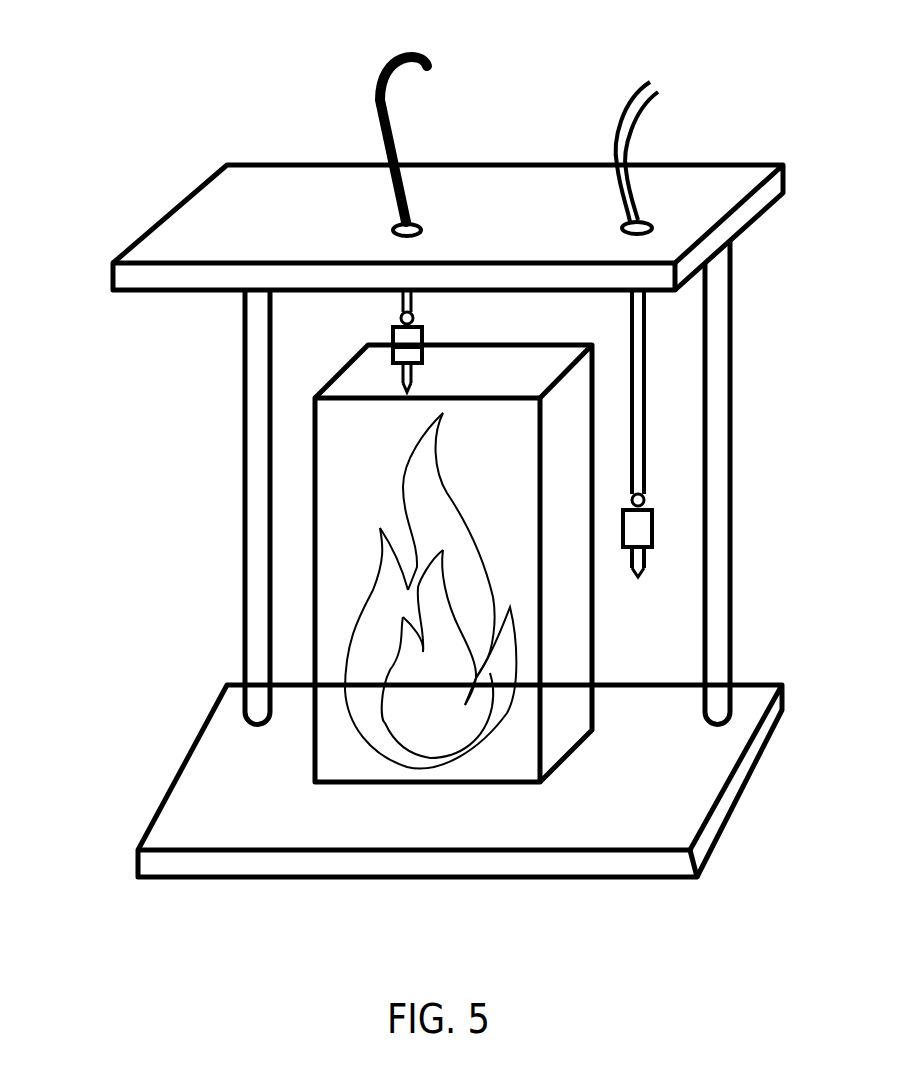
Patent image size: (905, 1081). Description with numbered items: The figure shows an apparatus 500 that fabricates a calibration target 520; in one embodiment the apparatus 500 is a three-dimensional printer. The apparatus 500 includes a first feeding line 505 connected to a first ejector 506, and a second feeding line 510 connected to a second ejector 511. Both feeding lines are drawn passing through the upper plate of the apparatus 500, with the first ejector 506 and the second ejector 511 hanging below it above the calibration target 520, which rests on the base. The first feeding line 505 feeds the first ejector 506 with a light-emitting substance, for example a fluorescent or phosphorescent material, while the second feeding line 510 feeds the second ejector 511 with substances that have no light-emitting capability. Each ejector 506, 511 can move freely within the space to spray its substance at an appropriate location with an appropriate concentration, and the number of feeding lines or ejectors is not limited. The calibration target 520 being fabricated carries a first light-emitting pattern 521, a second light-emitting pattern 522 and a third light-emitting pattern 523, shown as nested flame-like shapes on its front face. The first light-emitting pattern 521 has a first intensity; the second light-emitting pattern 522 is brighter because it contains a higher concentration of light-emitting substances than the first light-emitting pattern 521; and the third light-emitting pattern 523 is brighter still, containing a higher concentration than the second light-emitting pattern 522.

The apparatus 500 is at (128, 89).
The first feeding line 505 is at (383, 120).
The second feeding line 510 is at (623, 110).
The first ejector 506 is at (397, 320).
The second ejector 511 is at (652, 528).
The calibration target 520 is at (548, 768).
The first light-emitting pattern 521 is at (360, 758).
The second light-emitting pattern 522 is at (368, 663).
The third light-emitting pattern 523 is at (427, 713).